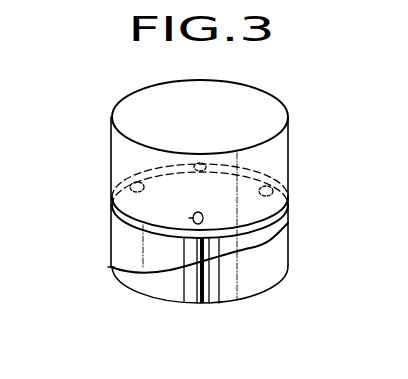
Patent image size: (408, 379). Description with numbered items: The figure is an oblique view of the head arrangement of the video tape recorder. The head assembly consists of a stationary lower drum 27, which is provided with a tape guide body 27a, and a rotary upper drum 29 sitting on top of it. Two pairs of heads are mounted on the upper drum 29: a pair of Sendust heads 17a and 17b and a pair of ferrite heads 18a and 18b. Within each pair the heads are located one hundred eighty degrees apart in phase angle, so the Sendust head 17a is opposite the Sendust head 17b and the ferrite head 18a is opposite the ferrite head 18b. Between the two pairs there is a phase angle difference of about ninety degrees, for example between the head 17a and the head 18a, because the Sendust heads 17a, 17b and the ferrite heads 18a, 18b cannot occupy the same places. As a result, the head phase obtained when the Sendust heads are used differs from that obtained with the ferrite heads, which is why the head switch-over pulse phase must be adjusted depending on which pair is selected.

The rotary upper drum 29 is at (280, 99).
The Sendust head 17a is at (225, 163).
The Sendust head 17b is at (232, 241).
The ferrite head 18a is at (130, 186).
The ferrite head 18b is at (273, 190).
The stationary lower drum 27 is at (215, 306).
The tape guide body 27a is at (143, 268).